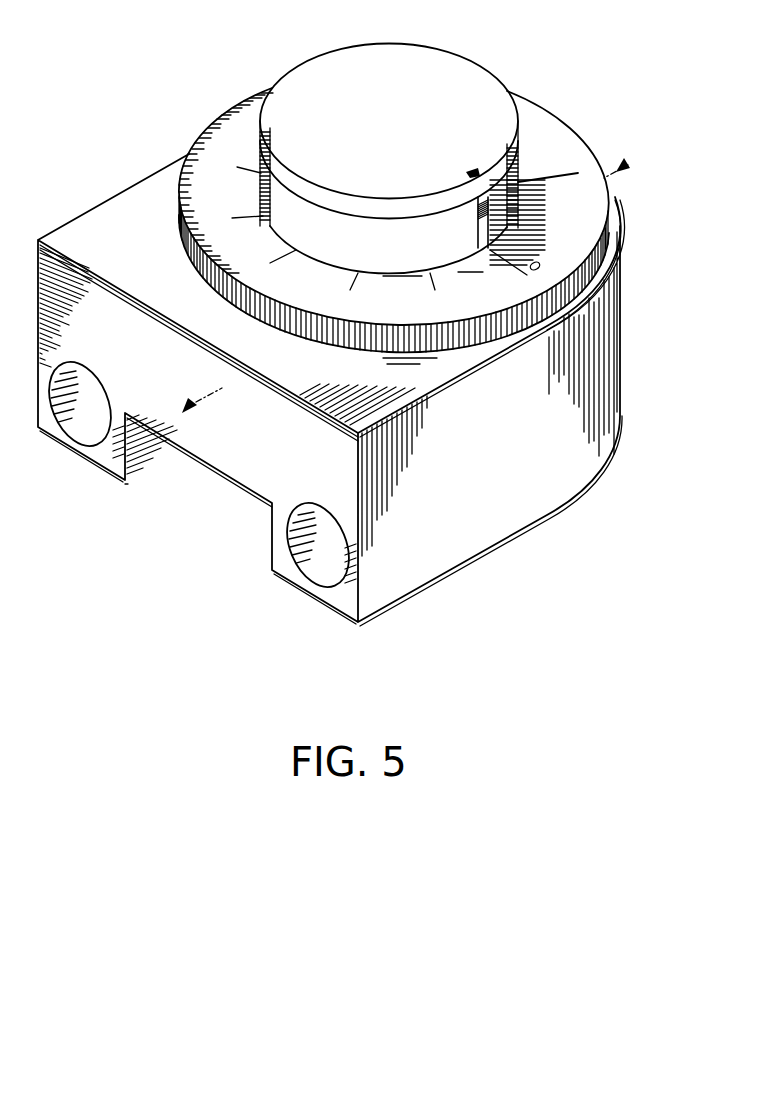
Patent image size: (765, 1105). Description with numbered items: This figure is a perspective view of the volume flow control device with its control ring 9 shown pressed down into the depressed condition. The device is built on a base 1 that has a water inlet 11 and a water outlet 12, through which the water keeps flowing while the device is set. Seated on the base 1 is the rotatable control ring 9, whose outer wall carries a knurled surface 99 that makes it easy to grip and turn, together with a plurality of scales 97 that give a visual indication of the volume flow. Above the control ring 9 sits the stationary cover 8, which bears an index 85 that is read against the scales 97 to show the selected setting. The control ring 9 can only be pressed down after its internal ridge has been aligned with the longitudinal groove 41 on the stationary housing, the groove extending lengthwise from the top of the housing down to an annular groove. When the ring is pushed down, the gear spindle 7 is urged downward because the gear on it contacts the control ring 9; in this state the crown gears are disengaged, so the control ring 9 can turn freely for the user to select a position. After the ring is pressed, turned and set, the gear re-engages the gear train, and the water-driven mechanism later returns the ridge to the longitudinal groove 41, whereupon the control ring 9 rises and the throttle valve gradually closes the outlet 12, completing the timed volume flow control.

The base 1 is at (463, 551).
The gear spindle 7 is at (401, 279).
The stationary cover 8 is at (451, 64).
The control ring 9 is at (535, 102).
The water inlet 11 is at (309, 568).
The water outlet 12 is at (79, 430).
The longitudinal groove 41 is at (477, 233).
The index 85 is at (472, 168).
The scales 97 is at (548, 176).
The knurled surface 99 is at (486, 334).